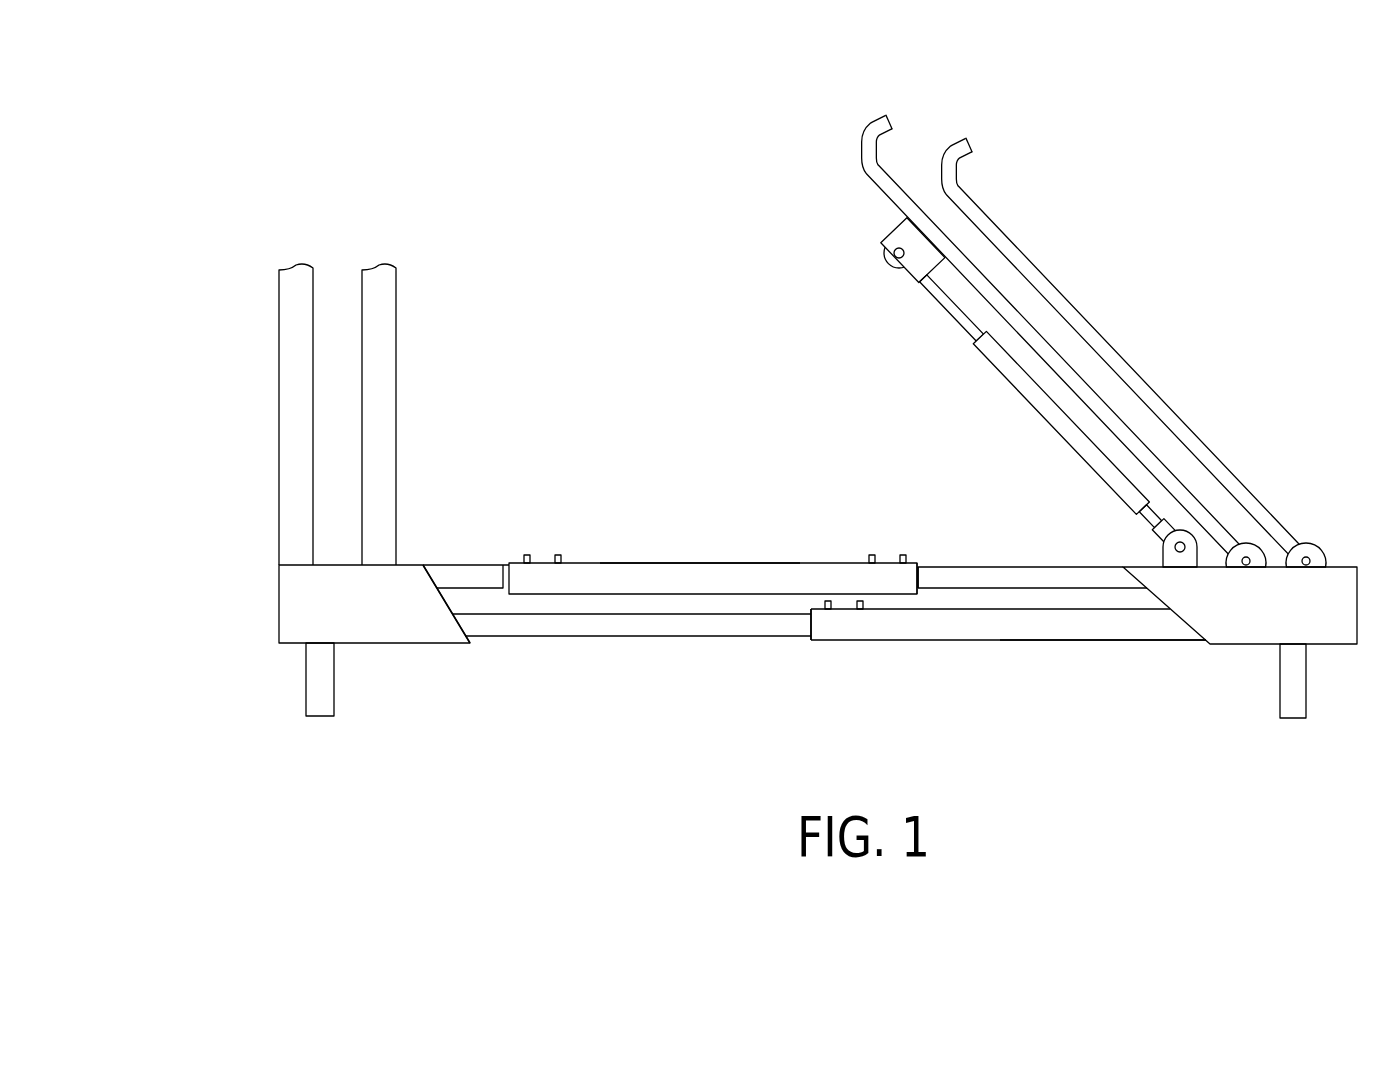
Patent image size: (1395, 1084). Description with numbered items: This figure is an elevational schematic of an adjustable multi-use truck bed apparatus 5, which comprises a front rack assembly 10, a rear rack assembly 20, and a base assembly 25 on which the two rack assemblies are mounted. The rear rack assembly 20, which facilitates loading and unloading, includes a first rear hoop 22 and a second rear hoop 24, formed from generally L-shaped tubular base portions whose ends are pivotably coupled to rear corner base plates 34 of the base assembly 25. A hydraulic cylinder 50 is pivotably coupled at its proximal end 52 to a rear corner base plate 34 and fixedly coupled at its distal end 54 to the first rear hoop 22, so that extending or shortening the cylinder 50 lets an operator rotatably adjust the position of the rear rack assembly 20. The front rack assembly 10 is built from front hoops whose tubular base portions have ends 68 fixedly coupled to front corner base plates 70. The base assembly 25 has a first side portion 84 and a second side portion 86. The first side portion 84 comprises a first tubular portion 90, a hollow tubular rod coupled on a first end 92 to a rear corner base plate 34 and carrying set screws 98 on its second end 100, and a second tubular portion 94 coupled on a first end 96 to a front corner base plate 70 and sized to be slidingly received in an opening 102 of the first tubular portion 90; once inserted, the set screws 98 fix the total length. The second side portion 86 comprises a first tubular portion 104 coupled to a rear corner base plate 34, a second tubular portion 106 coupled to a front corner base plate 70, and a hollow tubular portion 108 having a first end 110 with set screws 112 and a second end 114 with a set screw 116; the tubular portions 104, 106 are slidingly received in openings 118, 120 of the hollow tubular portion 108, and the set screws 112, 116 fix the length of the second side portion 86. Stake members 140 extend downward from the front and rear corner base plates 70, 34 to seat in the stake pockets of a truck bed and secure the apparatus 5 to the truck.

The adjustable multi-use truck bed apparatus 5 is at (678, 297).
The front rack assembly 10 is at (226, 350).
The rear rack assembly 20 is at (1172, 343).
The first rear hoop 22 is at (873, 126).
The second rear hoop 24 is at (1176, 410).
The base assembly 25 is at (597, 690).
The rear corner base plates 34 is at (1235, 647).
The hydraulic cylinders 50 is at (1022, 402).
The proximal end 52 is at (1165, 540).
The distal end 54 is at (895, 243).
The ends 68 is at (397, 378).
The front corner base plates 70 is at (278, 596).
The first side portion 84 is at (866, 642).
The second side portion 86 is at (740, 562).
The first tubular portion 90 is at (1097, 645).
The first end 92 is at (1182, 645).
The second tubular portion 94 is at (683, 637).
The first end 96 is at (462, 647).
The set screws 98 is at (843, 607).
The second end 100 is at (822, 642).
The opening 102 is at (810, 641).
The first tubular portion 104 is at (1037, 567).
The second tubular portion 106 is at (428, 562).
The hollow tubular portion 108 is at (655, 562).
The first end 110 is at (913, 560).
The set screws 112 is at (871, 554).
The second end 114 is at (527, 554).
The set screw 116 is at (559, 554).
The opening 118 is at (507, 562).
The opening 120 is at (920, 562).
The stake members 140 is at (306, 685).